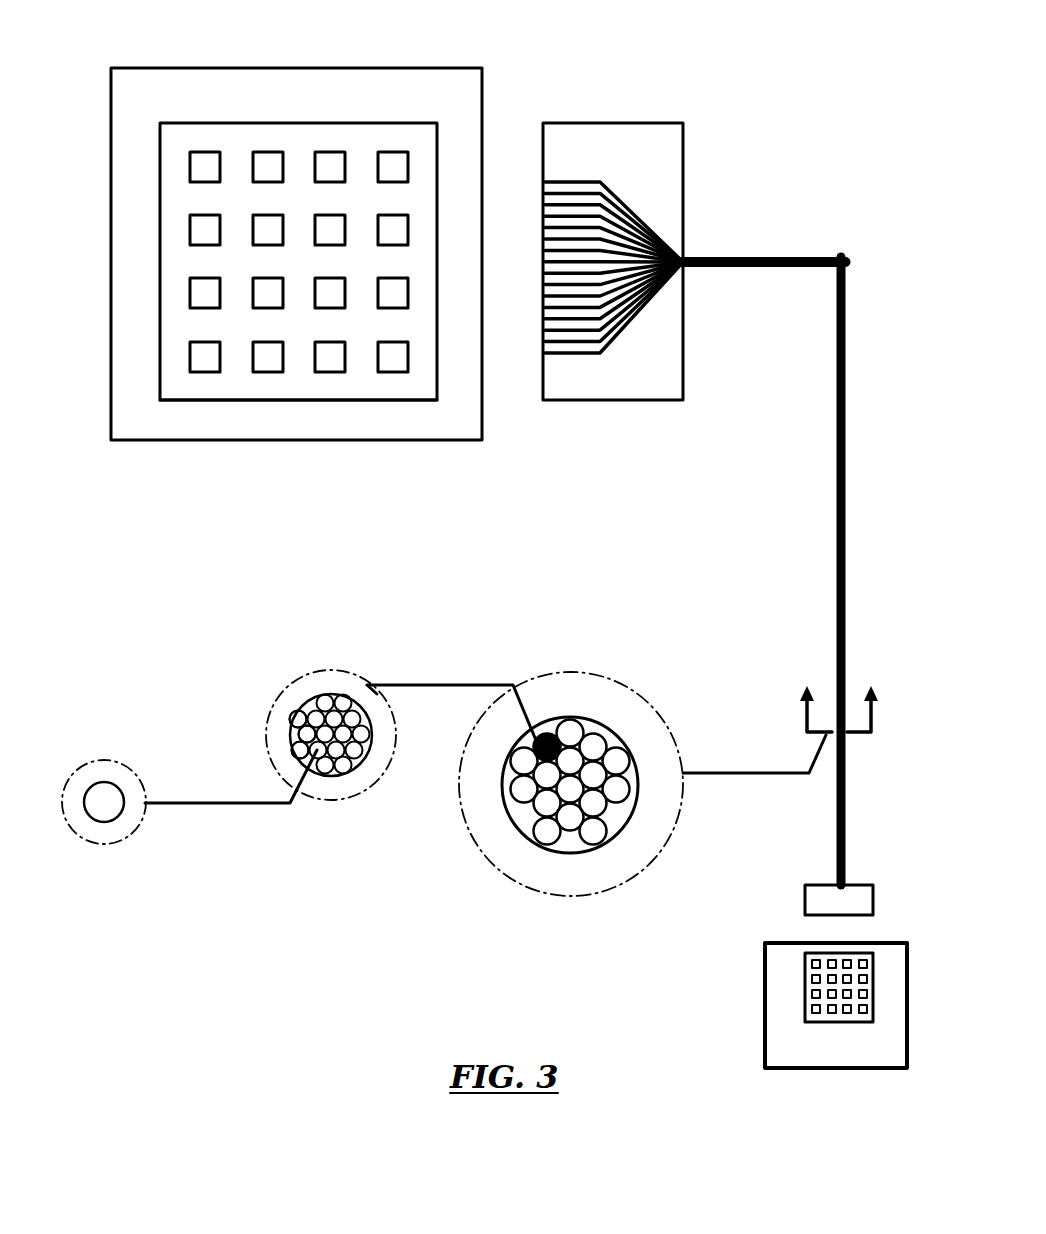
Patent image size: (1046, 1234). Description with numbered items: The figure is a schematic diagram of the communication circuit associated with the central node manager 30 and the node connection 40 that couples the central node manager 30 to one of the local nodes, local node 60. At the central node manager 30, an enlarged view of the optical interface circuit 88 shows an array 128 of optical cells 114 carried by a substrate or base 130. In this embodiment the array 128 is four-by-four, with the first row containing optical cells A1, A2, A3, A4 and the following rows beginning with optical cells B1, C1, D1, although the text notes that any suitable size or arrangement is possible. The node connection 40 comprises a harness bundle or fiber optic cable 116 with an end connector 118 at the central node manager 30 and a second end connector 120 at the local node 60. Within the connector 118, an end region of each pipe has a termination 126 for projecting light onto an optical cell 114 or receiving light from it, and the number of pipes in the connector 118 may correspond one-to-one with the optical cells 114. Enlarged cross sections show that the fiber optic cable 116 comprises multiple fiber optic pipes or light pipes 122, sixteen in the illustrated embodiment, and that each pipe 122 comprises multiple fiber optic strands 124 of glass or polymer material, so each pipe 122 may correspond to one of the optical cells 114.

The central node manager 30 is at (104, 392).
The array 128 is at (279, 93).
The optical interface circuit 88 is at (213, 123).
The substrate 130 is at (172, 402).
The optical cell A1 is at (190, 158).
The optical cell A2 is at (263, 152).
The optical cell A3 is at (327, 152).
The optical cell A4 is at (392, 152).
The optical cell B1 is at (190, 224).
The optical cell C1 is at (190, 288).
The optical cell D1 is at (190, 351).
The optical cells 114 is at (388, 372).
The end connector 118 is at (636, 123).
The termination 126 is at (545, 320).
The fiber optic cable 116 is at (765, 258).
The node connection 40 is at (834, 407).
The end connector 120 is at (810, 888).
The local node 60 is at (758, 1017).
The fiber optic pipe 122 is at (325, 693).
The fiber optic strand 124 is at (92, 782).